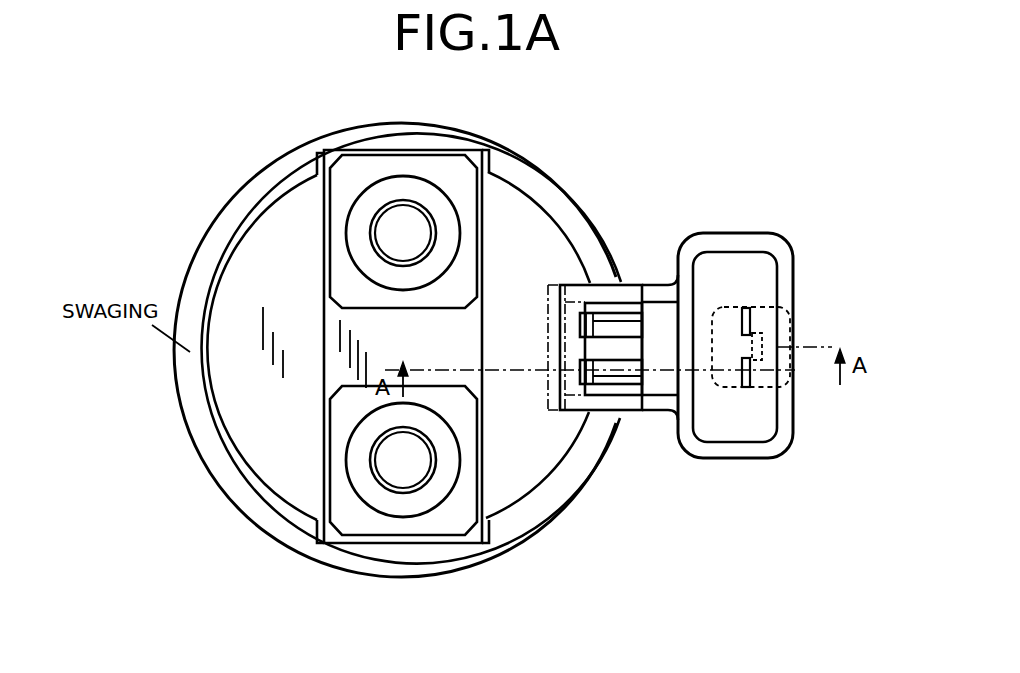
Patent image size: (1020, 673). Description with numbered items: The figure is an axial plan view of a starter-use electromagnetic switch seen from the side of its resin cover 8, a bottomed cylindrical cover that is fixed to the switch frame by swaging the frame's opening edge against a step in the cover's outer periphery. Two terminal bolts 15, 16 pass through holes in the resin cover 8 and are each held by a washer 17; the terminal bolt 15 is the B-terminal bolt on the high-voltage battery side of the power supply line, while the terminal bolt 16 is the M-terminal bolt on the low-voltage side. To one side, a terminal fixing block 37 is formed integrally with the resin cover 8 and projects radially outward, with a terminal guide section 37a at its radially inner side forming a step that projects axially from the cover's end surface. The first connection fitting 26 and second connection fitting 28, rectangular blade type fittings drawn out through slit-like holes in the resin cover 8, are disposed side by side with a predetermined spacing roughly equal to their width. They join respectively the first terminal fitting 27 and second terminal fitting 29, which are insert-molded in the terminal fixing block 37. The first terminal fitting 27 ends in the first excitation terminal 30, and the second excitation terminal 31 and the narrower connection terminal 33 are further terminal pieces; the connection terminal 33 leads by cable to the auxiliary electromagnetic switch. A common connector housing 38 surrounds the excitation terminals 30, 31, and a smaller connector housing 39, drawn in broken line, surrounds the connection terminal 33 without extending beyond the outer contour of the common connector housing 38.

The resin cover 8 is at (267, 263).
The terminal bolt 15 is at (410, 220).
The terminal bolt 16 is at (398, 478).
The washer 17 is at (377, 200).
The first connection fitting 26 is at (560, 280).
The first terminal fitting 27 is at (617, 327).
The second connection fitting 28 is at (580, 378).
The second terminal fitting 29 is at (618, 378).
The first excitation terminal 30 is at (749, 323).
The second excitation terminal 31 is at (750, 377).
The connection terminal 33 is at (761, 345).
The terminal fixing block 37 is at (658, 382).
The terminal guide section 37a is at (608, 348).
The common connector housing 38 is at (748, 233).
The connector housing 39 is at (732, 385).